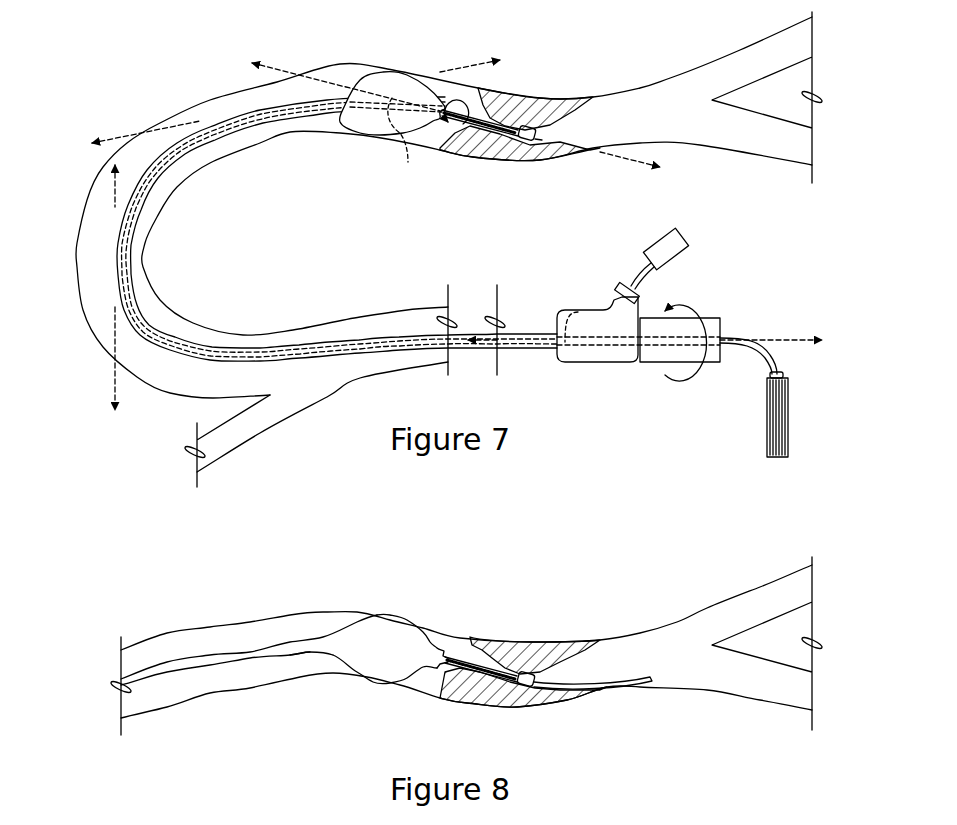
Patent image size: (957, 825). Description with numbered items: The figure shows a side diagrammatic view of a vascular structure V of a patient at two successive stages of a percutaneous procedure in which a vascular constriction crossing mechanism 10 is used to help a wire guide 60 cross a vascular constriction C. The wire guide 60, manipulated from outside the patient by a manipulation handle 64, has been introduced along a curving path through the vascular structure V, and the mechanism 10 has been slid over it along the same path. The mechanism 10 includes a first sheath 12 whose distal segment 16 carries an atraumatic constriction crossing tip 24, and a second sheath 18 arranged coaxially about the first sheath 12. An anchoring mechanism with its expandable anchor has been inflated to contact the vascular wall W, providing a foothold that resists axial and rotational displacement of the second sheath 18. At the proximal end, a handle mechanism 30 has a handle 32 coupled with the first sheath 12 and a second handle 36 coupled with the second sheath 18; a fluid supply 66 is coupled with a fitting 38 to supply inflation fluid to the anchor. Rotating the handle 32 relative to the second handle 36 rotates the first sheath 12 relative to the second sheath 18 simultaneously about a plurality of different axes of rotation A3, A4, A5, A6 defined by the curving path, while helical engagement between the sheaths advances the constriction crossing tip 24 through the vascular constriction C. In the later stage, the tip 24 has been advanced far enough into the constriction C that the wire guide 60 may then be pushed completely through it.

In FIG. 7, the vascular constriction crossing mechanism 10 is at (290, 117).
In FIG. 8, the vascular constriction crossing mechanism 10 is at (294, 663).
In FIG. 7, the first sheath 12 is at (572, 311).
In FIG. 7, the distal segment 16 is at (479, 110).
In FIG. 7, the second sheath 18 is at (223, 125).
In FIG. 7, the constriction crossing tip 24 is at (527, 125).
In FIG. 8, the constriction crossing tip 24 is at (529, 671).
In FIG. 7, the handle mechanism 30 is at (629, 317).
In FIG. 7, the handle 32 is at (642, 362).
In FIG. 7, the second handle 36 is at (560, 362).
In FIG. 7, the fitting 38 is at (617, 285).
In FIG. 7, the wire guide 60 is at (788, 366).
In FIG. 8, the wire guide 60 is at (648, 683).
In FIG. 7, the manipulation handle 64 is at (767, 400).
In FIG. 7, the fluid supply 66 is at (670, 270).
In FIG. 7, the vascular structure V is at (168, 122).
In FIG. 8, the vascular structure V is at (268, 624).
In FIG. 7, the vascular wall W is at (259, 83).
In FIG. 8, the vascular wall W is at (306, 621).
In FIG. 7, the vascular constriction C is at (607, 163).
In FIG. 8, the vascular constriction C is at (607, 710).
In FIG. 7, the axis of rotation A3 is at (633, 180).
In FIG. 7, the axis of rotation A4 is at (439, 71).
In FIG. 7, the axis of rotation A5 is at (109, 391).
In FIG. 7, the axis of rotation A6 is at (484, 343).